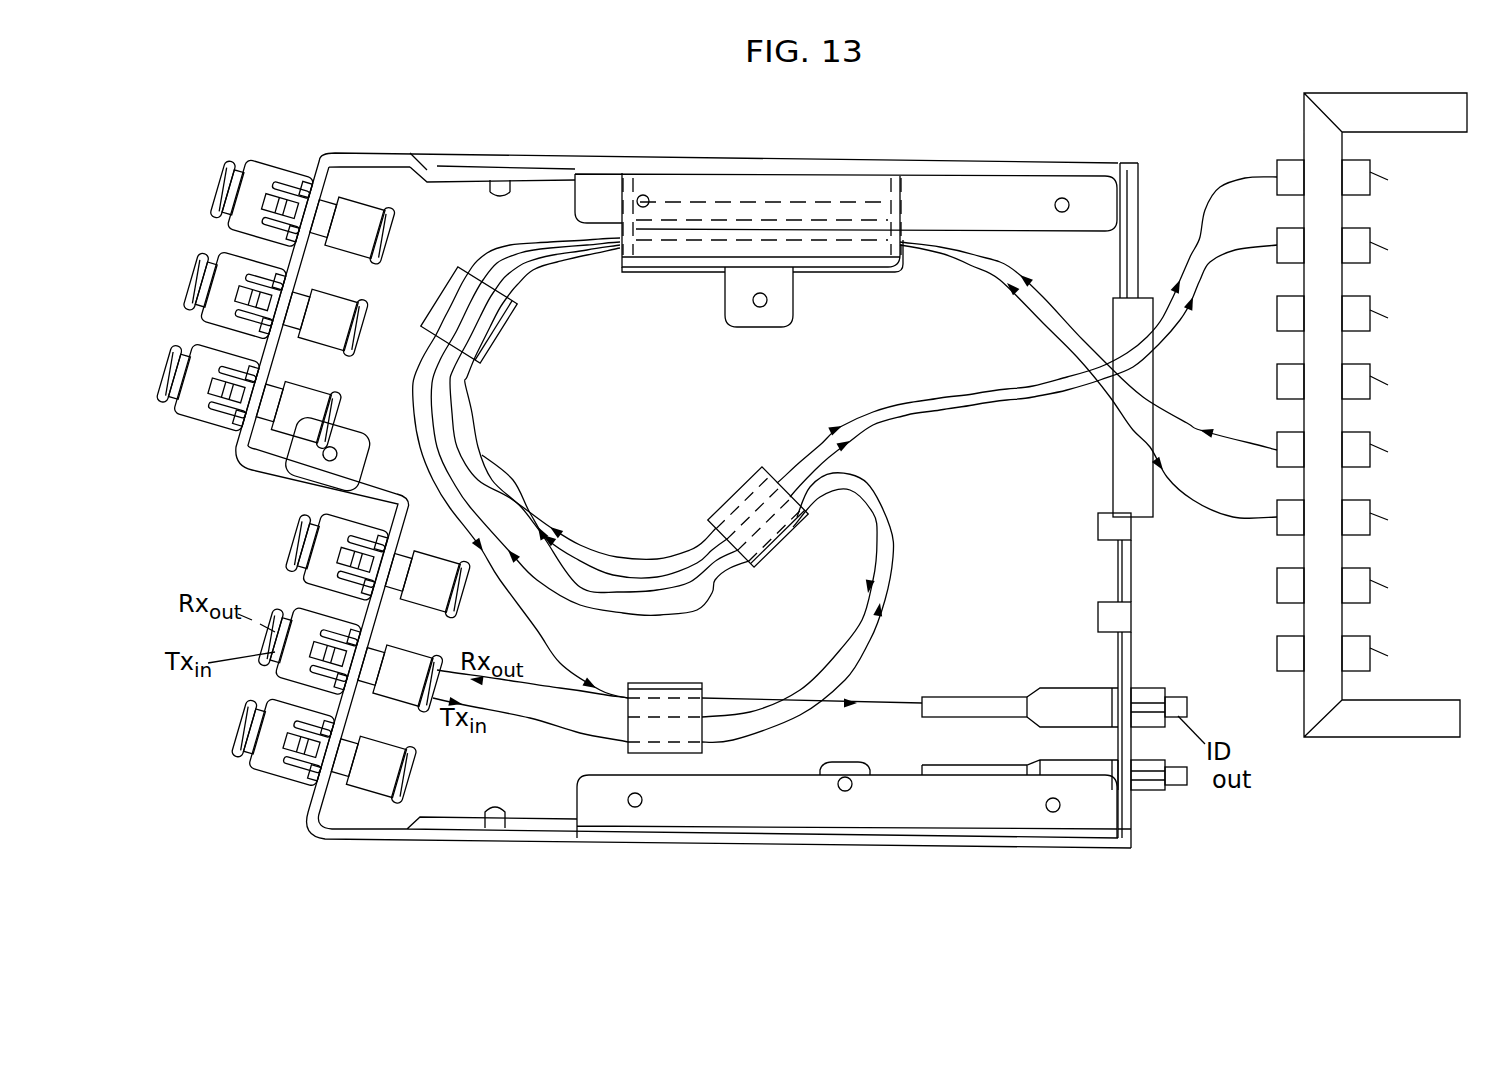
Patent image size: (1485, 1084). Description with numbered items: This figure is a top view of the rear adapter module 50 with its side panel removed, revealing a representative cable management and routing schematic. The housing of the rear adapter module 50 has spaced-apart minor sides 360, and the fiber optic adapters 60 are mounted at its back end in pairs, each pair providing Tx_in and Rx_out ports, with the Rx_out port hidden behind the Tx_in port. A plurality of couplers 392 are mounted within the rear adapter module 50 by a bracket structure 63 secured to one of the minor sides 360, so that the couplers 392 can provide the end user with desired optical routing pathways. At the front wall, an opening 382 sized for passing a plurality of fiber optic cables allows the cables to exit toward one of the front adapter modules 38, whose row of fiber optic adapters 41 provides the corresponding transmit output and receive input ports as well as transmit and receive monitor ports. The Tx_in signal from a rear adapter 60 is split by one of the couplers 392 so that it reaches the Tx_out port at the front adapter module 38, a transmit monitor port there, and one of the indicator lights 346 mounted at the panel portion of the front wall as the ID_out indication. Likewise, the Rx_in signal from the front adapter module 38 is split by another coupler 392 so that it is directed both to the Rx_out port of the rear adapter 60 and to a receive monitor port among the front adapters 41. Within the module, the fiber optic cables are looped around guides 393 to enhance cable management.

The rear adapter module 50 is at (463, 148).
The minor sides 360 is at (690, 154).
The couplers 392 is at (668, 246).
The bracket structure 63 is at (876, 268).
The guides 393 is at (500, 330).
The fiber optic adapters 60 is at (178, 352).
The opening 382 is at (1150, 503).
The indicator lights 346 is at (1173, 692).
The front adapter modules 38 is at (1320, 88).
The fiber optic adapters 41 is at (1283, 160).